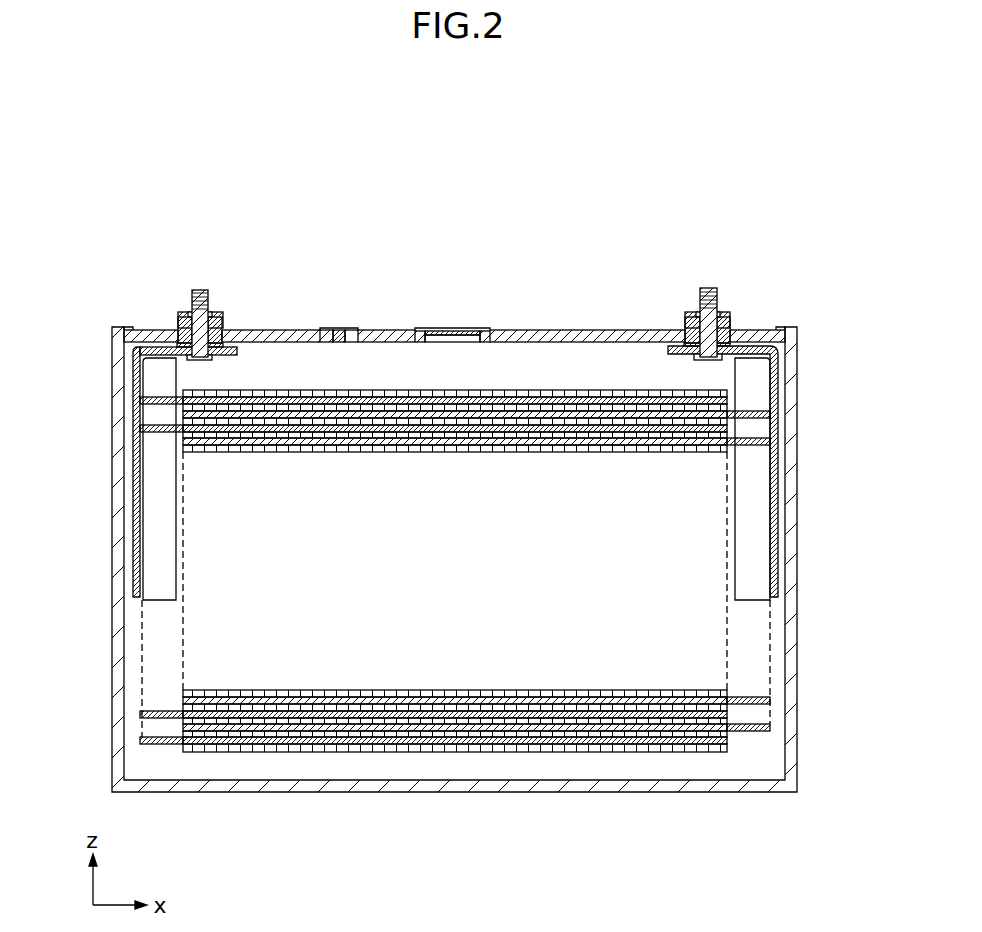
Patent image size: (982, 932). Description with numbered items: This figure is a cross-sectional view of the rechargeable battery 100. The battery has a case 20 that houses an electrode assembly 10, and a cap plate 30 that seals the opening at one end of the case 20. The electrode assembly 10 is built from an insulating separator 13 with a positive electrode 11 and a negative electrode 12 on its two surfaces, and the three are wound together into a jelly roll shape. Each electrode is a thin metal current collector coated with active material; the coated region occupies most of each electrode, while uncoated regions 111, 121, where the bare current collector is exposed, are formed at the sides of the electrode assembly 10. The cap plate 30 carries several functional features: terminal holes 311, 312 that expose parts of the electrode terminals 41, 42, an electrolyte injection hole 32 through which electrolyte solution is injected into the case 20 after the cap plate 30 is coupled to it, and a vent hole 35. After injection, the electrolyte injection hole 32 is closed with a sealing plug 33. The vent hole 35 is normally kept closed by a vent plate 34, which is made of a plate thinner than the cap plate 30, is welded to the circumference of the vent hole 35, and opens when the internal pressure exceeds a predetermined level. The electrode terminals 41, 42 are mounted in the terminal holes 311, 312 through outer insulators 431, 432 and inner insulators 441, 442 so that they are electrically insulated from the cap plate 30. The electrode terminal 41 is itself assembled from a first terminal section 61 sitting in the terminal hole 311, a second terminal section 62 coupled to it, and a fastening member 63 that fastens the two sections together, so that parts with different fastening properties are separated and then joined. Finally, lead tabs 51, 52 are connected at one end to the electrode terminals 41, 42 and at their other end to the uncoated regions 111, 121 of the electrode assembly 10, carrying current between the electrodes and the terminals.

The rechargeable battery 100 is at (441, 130).
The electrode assembly 10 is at (455, 632).
The positive electrode 11 is at (272, 750).
The negative electrode 12 is at (345, 750).
The separator 13 is at (462, 730).
The uncoated region 111 is at (160, 745).
The uncoated region 121 is at (750, 732).
The case 20 is at (625, 792).
The cap plate 30 is at (553, 341).
The terminal hole 311 is at (180, 322).
The terminal hole 312 is at (690, 322).
The electrolyte injection hole 32 is at (345, 330).
The sealing plug 33 is at (334, 330).
The vent plate 34 is at (467, 330).
The vent hole 35 is at (445, 342).
The electrode terminal 41 is at (200, 290).
The electrode terminal 42 is at (707, 289).
The outer insulator 431 is at (214, 330).
The outer insulator 432 is at (727, 315).
The inner insulator 441 is at (126, 343).
The inner insulator 442 is at (762, 344).
The lead tab 51 is at (136, 380).
The lead tab 52 is at (778, 403).
The first terminal section 61 is at (212, 360).
The second terminal section 62 is at (183, 313).
The fastening member 63 is at (211, 312).